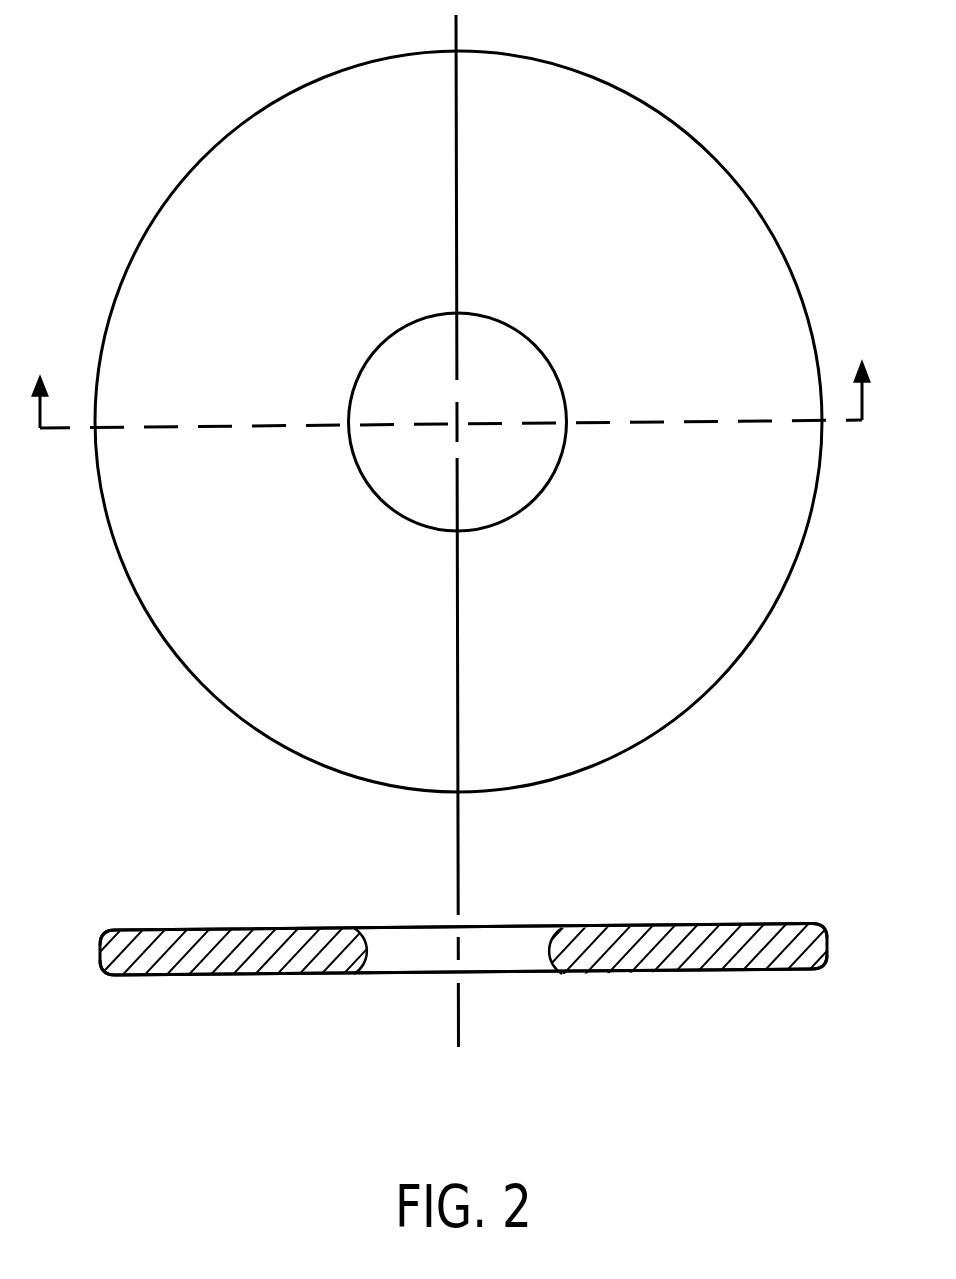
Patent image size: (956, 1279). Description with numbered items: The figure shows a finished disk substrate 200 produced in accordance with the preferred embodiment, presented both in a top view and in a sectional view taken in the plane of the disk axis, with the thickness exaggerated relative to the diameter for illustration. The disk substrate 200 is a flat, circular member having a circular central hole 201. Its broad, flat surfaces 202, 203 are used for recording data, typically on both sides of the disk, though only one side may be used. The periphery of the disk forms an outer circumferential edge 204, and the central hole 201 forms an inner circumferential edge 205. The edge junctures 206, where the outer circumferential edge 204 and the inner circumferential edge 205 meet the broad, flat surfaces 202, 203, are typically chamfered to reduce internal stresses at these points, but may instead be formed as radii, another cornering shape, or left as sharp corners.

The finished disk substrate 200 is at (765, 118).
The circular central hole 201 is at (428, 488).
The broad, flat surface 202 is at (191, 930).
The broad, flat surface 203 is at (210, 975).
The outer circumferential edge 204 is at (778, 598).
The inner circumferential edge 205 is at (505, 517).
The edge junctures 206 is at (108, 932).